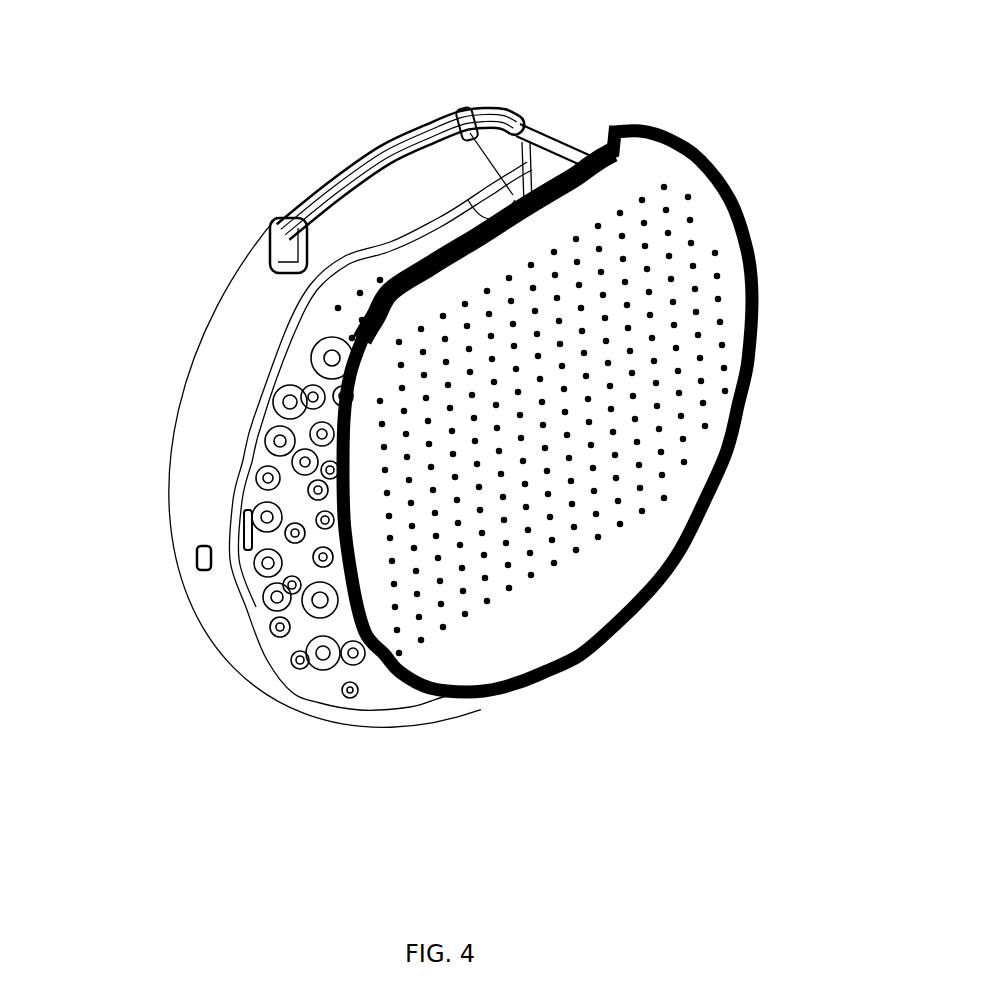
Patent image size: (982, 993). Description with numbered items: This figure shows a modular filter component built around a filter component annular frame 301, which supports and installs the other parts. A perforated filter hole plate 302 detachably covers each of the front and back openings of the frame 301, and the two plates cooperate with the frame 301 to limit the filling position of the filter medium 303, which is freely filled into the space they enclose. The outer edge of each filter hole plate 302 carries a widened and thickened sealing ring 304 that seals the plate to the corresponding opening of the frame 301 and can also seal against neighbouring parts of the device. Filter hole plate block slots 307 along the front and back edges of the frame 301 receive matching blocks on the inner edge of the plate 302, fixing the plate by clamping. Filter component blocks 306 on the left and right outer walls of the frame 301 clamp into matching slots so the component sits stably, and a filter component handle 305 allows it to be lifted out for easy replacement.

The filter component annular frame 301 is at (237, 343).
The filter hole plate 302 is at (620, 587).
The filter medium 303 is at (333, 635).
The sealing ring 304 is at (730, 193).
The filter component handle 305 is at (390, 152).
The filter component block 306 is at (207, 560).
The filter hole plate block slot 307 is at (357, 263).